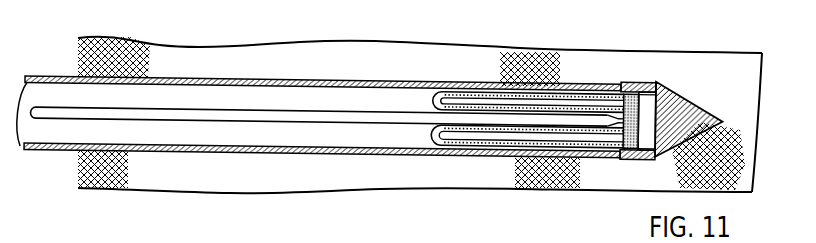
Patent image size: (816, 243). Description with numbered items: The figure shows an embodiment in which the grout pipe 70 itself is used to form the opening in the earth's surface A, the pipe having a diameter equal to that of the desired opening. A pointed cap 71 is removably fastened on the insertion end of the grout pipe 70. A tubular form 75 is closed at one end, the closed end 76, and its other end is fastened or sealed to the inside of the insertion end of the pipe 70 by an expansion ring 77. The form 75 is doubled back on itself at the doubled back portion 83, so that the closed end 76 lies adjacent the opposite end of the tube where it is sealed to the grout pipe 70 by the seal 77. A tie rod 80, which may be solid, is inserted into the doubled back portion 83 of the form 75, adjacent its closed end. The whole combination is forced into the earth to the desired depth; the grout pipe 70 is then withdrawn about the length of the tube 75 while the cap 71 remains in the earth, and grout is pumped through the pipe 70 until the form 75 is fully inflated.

The earth's surface A is at (74, 54).
The grout pipe 70 is at (247, 151).
The tie rod 80 is at (50, 119).
The doubled back portion 83 is at (477, 105).
The tubular form 75 is at (519, 143).
The closed end 76 is at (633, 86).
The expansion ring 77 is at (627, 145).
The pointed cap 71 is at (686, 108).